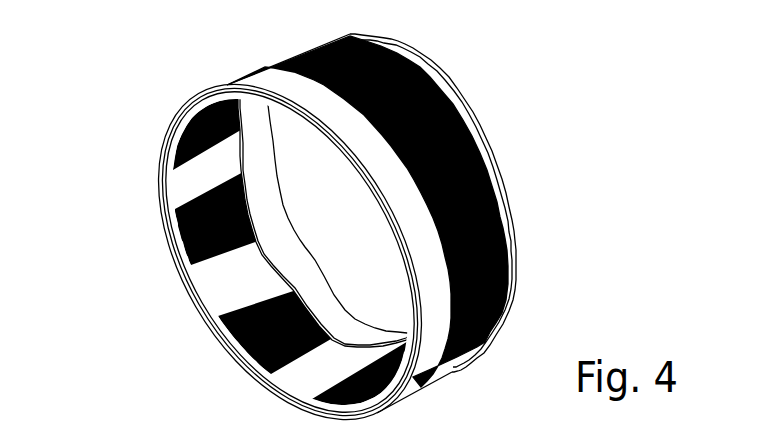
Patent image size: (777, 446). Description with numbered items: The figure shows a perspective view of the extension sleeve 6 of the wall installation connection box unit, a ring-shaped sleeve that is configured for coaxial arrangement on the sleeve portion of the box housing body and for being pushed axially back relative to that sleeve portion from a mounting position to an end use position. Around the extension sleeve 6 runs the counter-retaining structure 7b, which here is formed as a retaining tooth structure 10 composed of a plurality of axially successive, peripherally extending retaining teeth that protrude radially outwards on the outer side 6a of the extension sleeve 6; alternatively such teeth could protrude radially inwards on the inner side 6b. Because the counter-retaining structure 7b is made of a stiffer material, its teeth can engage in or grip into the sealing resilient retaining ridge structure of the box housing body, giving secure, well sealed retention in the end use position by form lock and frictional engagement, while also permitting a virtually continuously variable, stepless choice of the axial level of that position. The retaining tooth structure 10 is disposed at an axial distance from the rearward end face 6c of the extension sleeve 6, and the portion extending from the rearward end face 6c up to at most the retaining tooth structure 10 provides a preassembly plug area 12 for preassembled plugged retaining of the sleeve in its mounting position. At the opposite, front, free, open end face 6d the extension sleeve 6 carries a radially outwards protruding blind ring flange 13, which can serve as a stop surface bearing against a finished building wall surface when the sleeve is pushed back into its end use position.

The extension sleeve 6 is at (457, 121).
The outer side 6a is at (477, 349).
The inner side 6b is at (225, 295).
The rearward end face 6c is at (313, 253).
The front, free, open end face 6d is at (267, 388).
The counter-retaining structure 7b is at (510, 273).
The retaining tooth structure 10 is at (510, 238).
The preassembly plug area 12 is at (270, 211).
The blind ring flange 13 is at (158, 184).